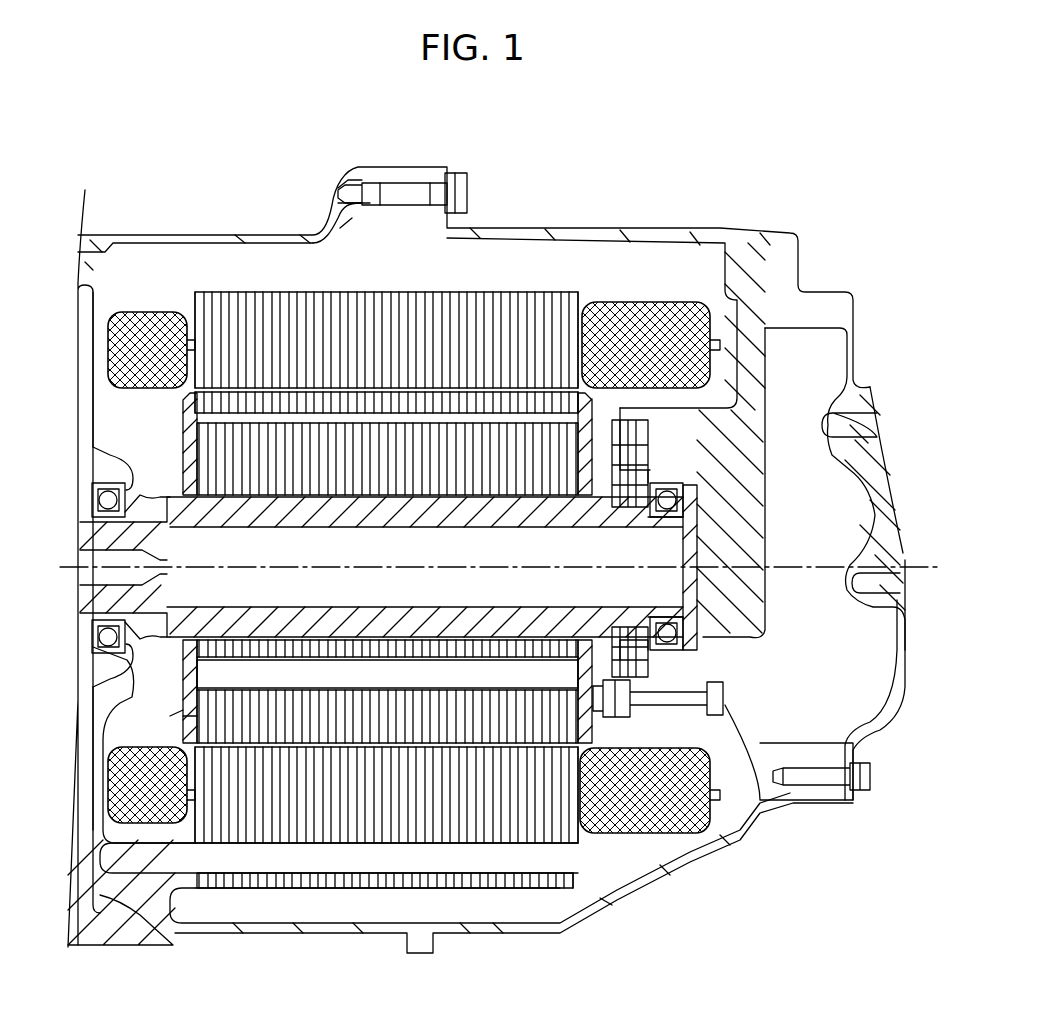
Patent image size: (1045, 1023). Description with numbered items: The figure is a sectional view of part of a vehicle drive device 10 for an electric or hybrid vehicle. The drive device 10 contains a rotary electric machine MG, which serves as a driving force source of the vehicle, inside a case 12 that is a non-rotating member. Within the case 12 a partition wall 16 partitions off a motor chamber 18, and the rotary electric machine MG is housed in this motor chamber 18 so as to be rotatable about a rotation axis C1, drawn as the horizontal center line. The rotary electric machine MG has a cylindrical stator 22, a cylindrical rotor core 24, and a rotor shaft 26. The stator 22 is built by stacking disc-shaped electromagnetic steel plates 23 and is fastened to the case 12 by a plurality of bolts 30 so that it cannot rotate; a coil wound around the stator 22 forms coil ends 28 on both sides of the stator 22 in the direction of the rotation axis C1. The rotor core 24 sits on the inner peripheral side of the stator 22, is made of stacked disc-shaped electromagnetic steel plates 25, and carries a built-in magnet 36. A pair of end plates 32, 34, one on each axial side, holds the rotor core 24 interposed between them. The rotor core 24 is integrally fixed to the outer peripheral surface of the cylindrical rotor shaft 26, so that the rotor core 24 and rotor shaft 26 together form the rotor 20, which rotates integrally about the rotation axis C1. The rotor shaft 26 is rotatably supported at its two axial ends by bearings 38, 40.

The vehicle drive device 10 is at (236, 98).
The case 12 is at (493, 197).
The partition wall 16 is at (80, 433).
The motor chamber 18 is at (152, 292).
The rotor 20 is at (158, 704).
The stator 22 is at (263, 896).
The electromagnetic steel plates 23 is at (245, 890).
The rotor core 24 is at (473, 733).
The electromagnetic steel plates 25 is at (220, 717).
The rotor shaft 26 is at (316, 512).
The coil ends 28 is at (623, 303).
The bolts 30 is at (535, 860).
The end plate 32 is at (190, 443).
The end plate 34 is at (580, 720).
The magnet 36 is at (324, 677).
The bearing 38 is at (95, 500).
The bearing 40 is at (672, 500).
The rotary electric machine MG is at (414, 285).
The rotation axis C1 is at (62, 570).